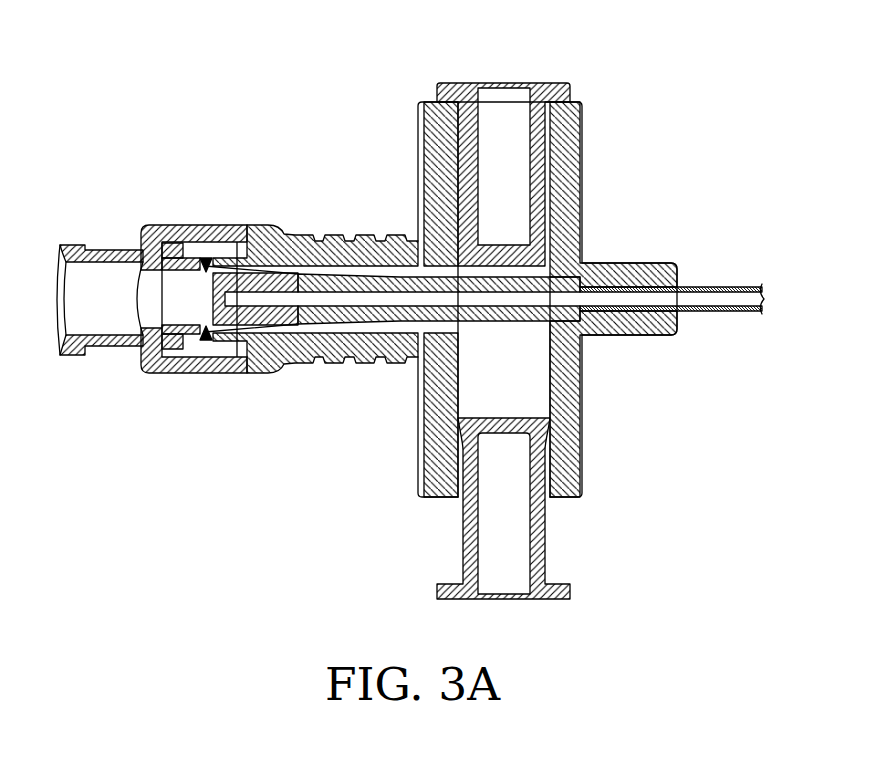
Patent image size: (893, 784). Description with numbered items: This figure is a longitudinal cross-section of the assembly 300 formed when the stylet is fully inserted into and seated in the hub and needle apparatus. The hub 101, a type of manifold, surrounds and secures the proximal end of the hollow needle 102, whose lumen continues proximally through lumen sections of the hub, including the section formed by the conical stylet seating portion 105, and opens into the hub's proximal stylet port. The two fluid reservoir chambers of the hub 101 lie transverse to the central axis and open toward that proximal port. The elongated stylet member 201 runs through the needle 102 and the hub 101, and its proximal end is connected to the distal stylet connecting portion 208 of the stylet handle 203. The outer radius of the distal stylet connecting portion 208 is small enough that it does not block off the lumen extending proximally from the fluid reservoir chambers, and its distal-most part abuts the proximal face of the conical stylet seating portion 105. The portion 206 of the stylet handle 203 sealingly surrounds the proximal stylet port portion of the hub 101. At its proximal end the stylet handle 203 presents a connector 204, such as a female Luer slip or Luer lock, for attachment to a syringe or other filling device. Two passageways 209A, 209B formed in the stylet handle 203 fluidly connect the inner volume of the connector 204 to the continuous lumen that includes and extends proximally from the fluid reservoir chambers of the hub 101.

The assembly 300 is at (669, 92).
The hub 101 is at (576, 458).
The hollow needle 102 is at (737, 286).
The conical stylet seating portion 105 is at (333, 352).
The elongated stylet member 201 is at (268, 300).
The stylet handle 203 is at (143, 236).
The connector 204 is at (129, 367).
The portion of stylet handle 206 is at (238, 213).
The distal stylet connecting portion 208 is at (242, 328).
The passageway 209A is at (206, 260).
The passageway 209B is at (206, 340).